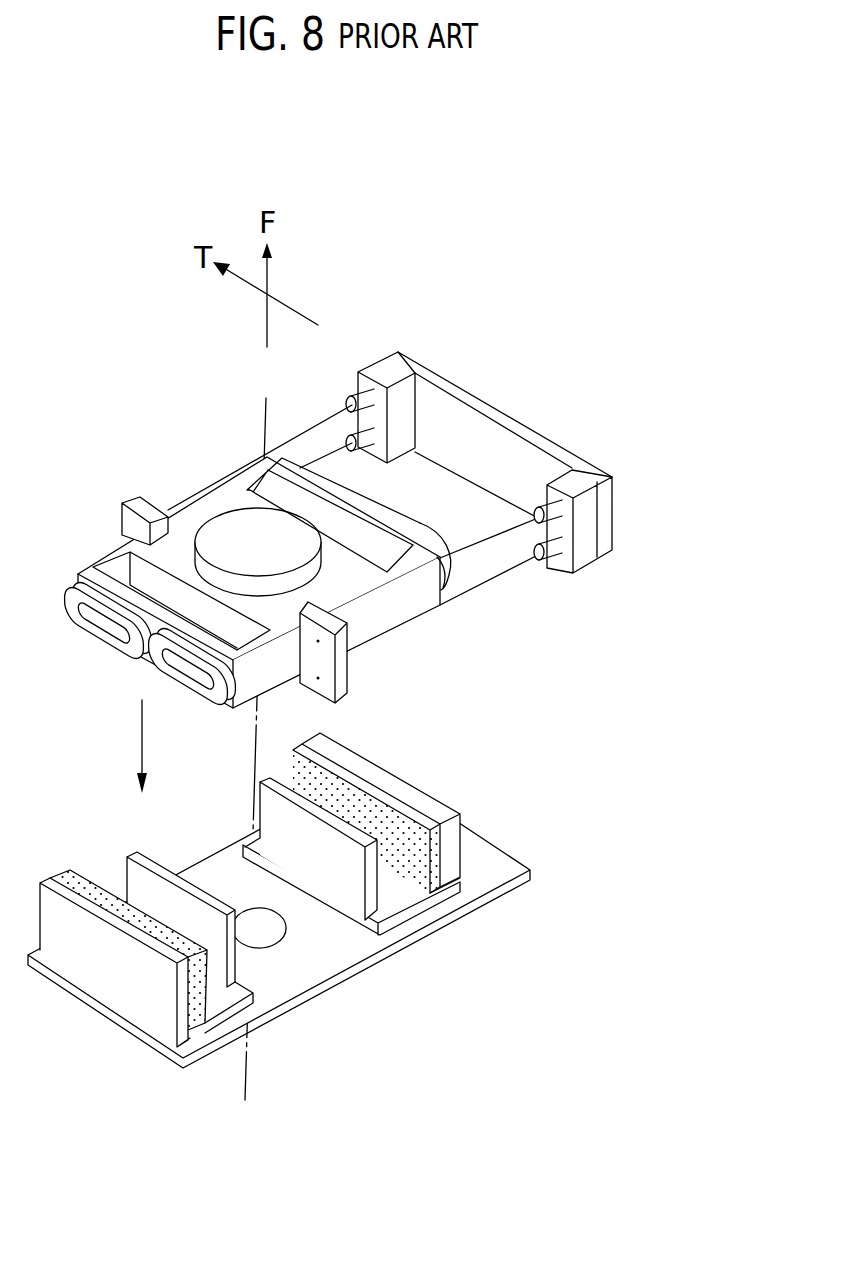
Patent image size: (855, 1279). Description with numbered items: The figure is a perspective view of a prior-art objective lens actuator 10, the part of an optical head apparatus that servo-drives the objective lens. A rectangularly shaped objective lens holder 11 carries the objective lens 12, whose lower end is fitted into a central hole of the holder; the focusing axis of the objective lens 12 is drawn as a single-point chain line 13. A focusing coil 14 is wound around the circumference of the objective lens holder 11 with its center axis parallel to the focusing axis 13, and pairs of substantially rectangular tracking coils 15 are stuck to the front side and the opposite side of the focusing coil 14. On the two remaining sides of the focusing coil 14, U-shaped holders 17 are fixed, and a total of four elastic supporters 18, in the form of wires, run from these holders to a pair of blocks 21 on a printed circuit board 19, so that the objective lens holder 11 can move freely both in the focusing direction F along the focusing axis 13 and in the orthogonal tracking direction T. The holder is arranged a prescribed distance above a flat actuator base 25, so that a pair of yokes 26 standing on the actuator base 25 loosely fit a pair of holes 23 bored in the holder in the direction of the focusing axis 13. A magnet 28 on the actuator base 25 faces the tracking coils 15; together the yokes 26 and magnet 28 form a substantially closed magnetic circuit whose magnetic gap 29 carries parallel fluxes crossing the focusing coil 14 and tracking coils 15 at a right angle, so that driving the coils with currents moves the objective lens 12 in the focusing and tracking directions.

The objective lens actuator 10 is at (596, 710).
The objective lens holder 11 is at (153, 545).
The objective lens 12 is at (227, 520).
The focusing axis 13 is at (250, 1073).
The focusing coil 14 is at (423, 597).
The tracking coils 15 is at (98, 640).
The U-shaped holders 17 is at (130, 498).
The elastic supporters 18 is at (472, 555).
The printed circuit board 19 is at (504, 417).
The blocks 21 is at (380, 368).
The holes 23 is at (340, 523).
The actuator base 25 is at (350, 955).
The yokes 26 is at (130, 852).
The magnet 28 is at (103, 978).
The magnetic gap 29 is at (127, 870).